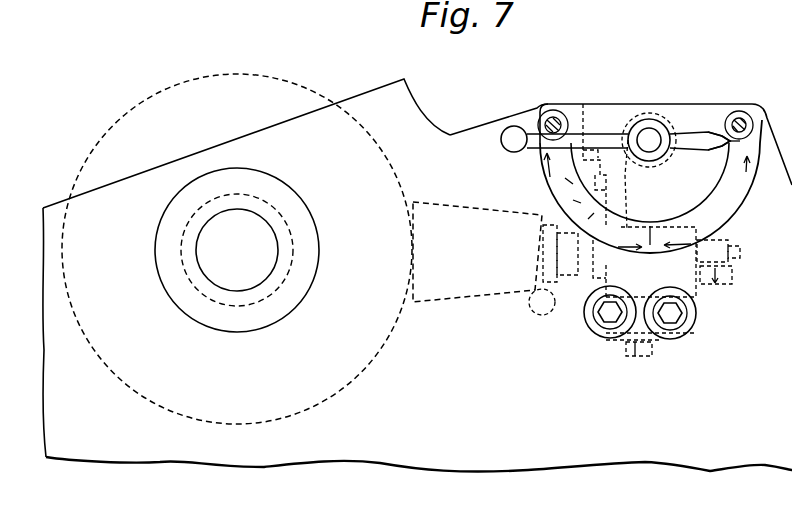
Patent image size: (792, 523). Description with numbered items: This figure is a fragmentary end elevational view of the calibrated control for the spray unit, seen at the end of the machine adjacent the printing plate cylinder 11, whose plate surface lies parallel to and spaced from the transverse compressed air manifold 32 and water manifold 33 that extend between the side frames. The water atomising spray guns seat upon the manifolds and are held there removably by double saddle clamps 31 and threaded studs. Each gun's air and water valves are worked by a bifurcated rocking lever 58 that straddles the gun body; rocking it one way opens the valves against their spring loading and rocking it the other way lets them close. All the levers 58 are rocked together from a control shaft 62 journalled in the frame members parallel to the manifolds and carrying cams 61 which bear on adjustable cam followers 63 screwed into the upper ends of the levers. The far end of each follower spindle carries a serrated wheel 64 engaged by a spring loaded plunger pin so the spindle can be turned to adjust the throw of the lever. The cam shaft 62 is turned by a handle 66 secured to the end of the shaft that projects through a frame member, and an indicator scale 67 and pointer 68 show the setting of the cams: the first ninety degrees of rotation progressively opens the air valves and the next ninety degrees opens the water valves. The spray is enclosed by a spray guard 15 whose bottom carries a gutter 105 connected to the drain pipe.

The cylinder 11 is at (249, 72).
The housing 15 is at (470, 206).
The double saddle clamps 31 is at (637, 333).
The compressed air manifold 32 is at (673, 306).
The water manifold 33 is at (608, 318).
The bifurcated rocking lever 58 is at (622, 188).
The cams 61 is at (692, 143).
The control shaft 62 is at (653, 136).
The cam follower 63 is at (628, 130).
The serrated wheel 64 is at (583, 104).
The handle 66 is at (510, 127).
The indicator scale 67 is at (716, 198).
The pointer 68 is at (701, 134).
The gutter 105 is at (533, 317).